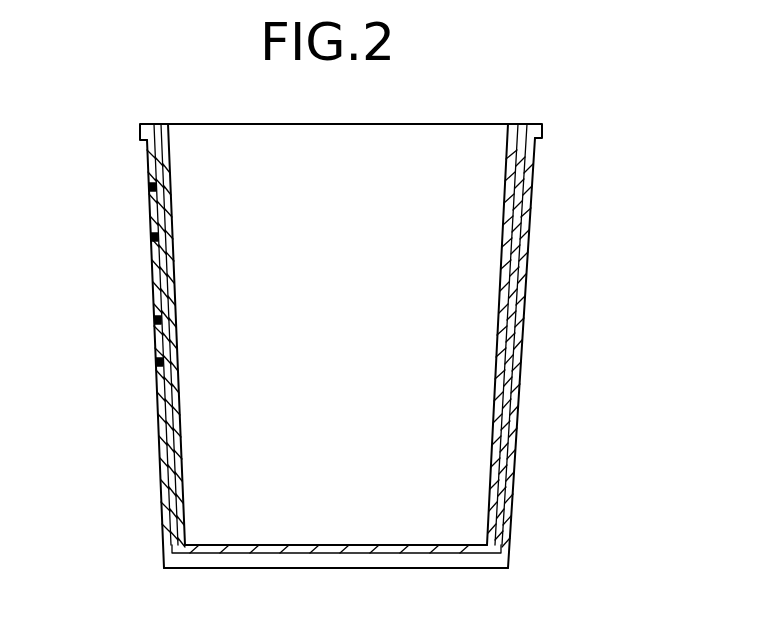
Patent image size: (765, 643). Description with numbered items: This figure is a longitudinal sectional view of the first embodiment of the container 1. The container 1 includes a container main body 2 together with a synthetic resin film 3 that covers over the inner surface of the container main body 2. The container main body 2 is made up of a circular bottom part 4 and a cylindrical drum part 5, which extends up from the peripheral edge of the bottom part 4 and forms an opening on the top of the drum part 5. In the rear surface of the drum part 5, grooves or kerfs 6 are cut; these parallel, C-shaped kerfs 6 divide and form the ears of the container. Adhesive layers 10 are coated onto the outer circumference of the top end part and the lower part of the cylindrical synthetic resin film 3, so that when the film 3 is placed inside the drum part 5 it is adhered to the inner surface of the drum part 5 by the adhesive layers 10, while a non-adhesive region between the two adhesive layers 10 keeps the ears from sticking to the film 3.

The container 1 is at (118, 122).
The container main body 2 is at (150, 430).
The synthetic resin film 3 is at (173, 228).
The bottom part 4 is at (311, 553).
The drum part 5 is at (157, 400).
The kerfs 6 is at (150, 187).
The adhesive layers 10 is at (148, 150).